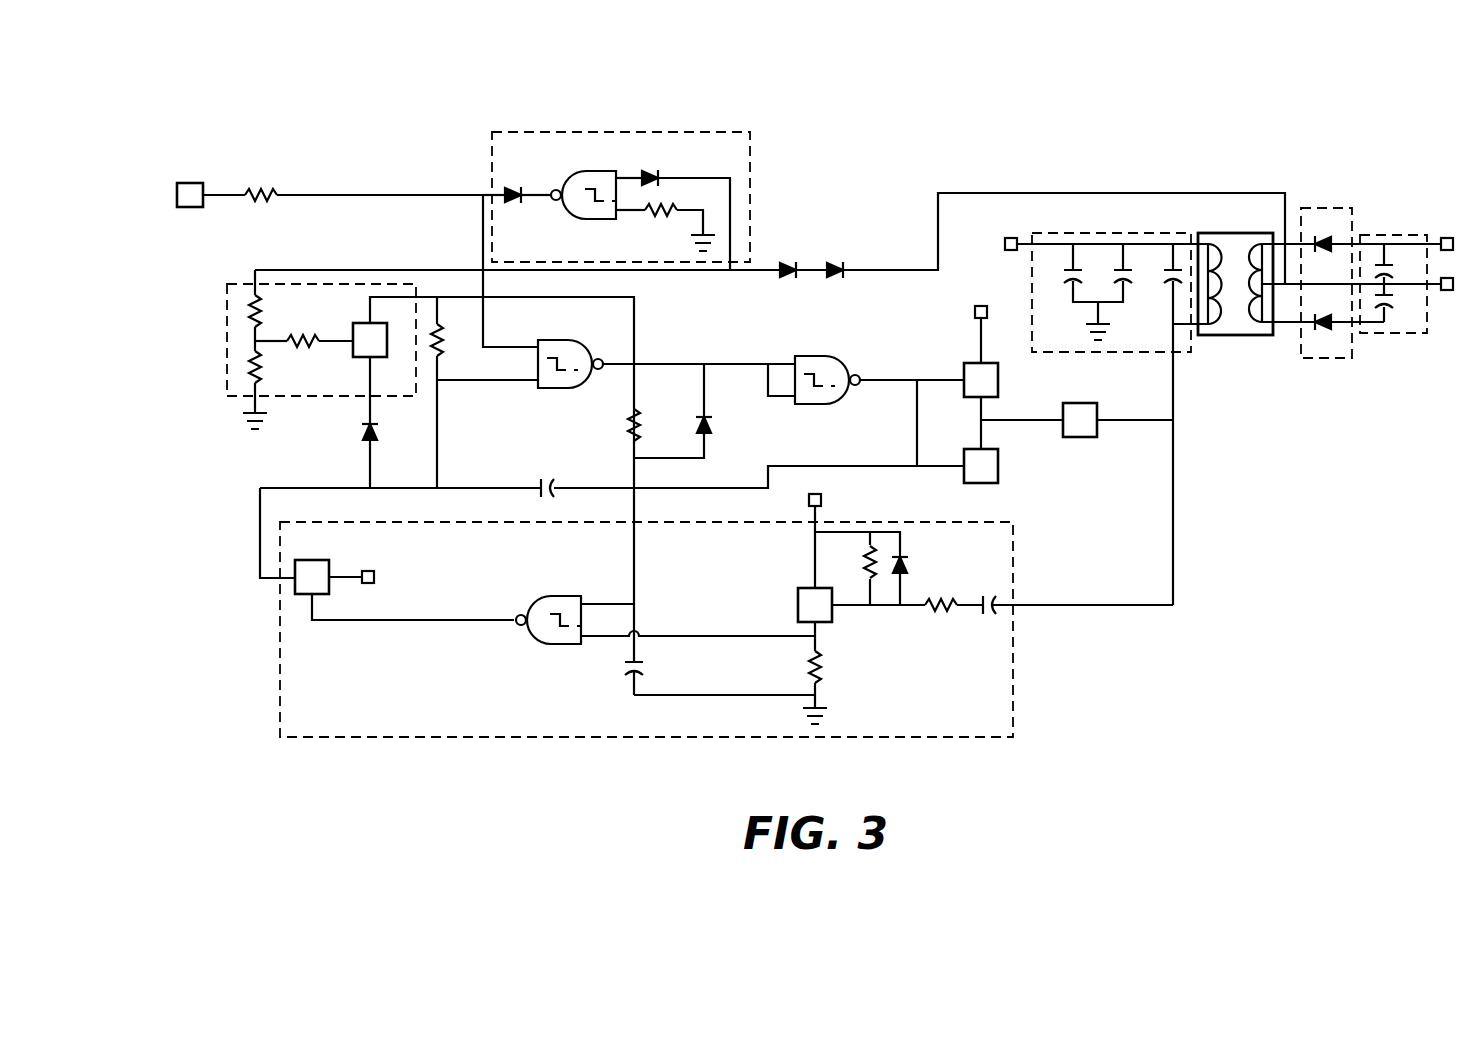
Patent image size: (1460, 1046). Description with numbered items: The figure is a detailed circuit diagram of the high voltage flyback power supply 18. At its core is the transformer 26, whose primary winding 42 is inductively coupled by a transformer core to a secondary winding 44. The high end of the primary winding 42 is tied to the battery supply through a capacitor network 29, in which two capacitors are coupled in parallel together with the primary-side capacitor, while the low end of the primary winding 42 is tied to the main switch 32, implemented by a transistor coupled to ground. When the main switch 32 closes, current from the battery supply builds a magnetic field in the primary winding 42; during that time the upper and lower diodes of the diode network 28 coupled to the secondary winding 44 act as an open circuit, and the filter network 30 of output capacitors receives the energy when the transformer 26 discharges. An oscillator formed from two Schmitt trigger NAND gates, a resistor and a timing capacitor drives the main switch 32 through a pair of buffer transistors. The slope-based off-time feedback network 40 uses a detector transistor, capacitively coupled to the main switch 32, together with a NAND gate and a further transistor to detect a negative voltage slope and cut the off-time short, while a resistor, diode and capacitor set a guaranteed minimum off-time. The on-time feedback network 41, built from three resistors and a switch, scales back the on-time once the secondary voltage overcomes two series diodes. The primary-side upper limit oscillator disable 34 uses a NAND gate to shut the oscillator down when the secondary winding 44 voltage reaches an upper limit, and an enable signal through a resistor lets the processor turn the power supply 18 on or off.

The power supply 18 is at (530, 54).
The primary-side upper limit oscillator disable 34 is at (517, 132).
The on-time feedback network (scaling) 41 is at (227, 325).
The capacitor network 29 is at (1070, 233).
The primary winding 42 is at (1207, 233).
The secondary winding 44 is at (1263, 233).
The transformer 26 is at (1233, 336).
The diode network 28 is at (1330, 208).
The filter network 30 is at (1398, 235).
The main switch 32 is at (1086, 437).
The slope-based off-time feedback network (slope detect) 40 is at (1013, 547).